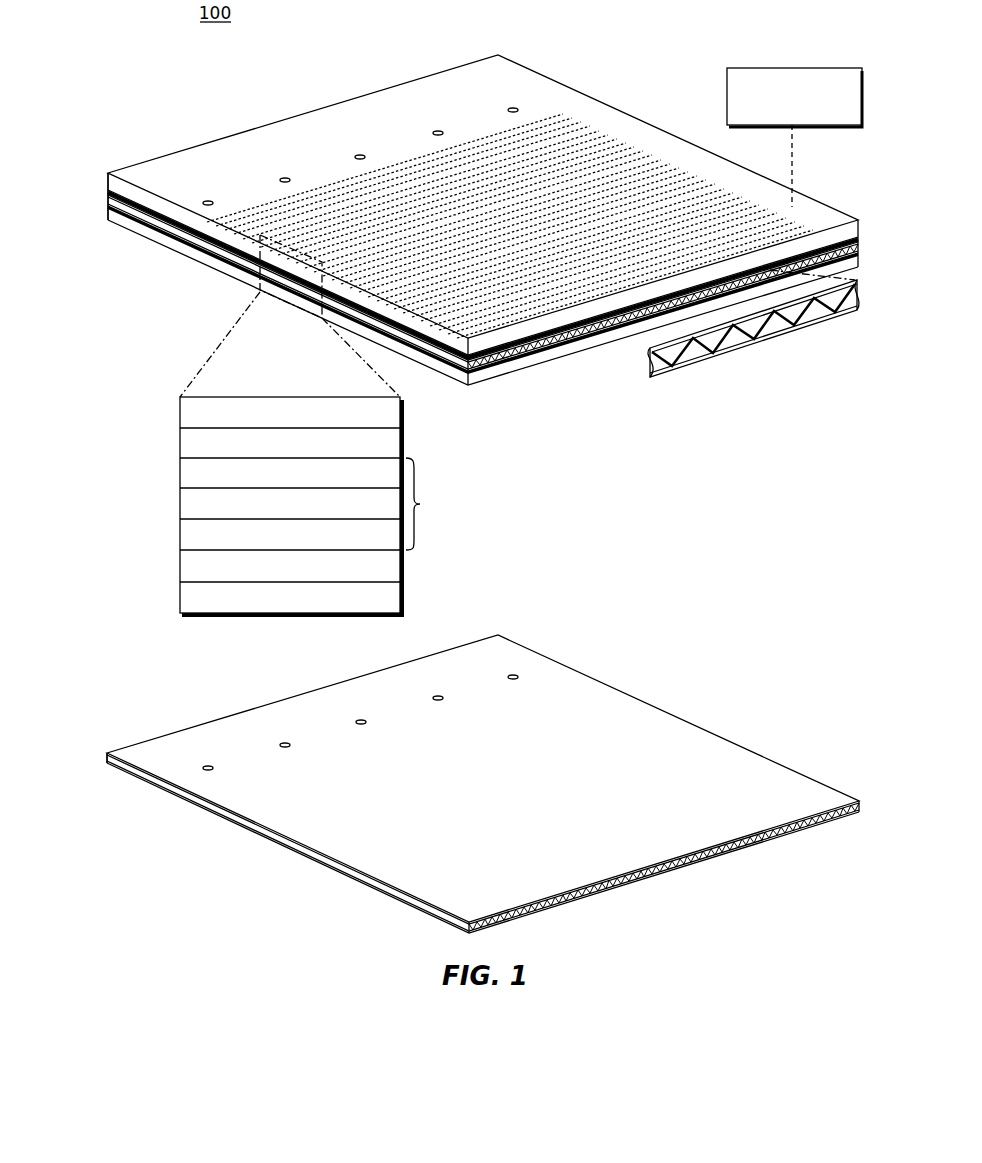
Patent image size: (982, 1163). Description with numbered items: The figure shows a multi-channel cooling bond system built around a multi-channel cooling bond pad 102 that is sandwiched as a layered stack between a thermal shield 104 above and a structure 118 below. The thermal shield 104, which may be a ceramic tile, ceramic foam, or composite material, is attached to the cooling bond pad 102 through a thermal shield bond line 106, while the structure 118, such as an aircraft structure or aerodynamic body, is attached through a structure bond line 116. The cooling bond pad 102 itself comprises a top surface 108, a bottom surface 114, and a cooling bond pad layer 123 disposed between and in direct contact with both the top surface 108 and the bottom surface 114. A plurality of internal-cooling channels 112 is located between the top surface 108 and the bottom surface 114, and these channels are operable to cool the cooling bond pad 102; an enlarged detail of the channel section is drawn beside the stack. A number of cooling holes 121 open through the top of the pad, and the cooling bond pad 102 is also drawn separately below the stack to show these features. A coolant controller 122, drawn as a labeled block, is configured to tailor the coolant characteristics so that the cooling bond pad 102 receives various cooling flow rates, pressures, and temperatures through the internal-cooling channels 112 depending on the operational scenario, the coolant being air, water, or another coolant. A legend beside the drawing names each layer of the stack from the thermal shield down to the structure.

The multi-channel cooling bond pad 102 is at (660, 613).
The thermal shield 104 is at (140, 196).
The thermal shield bond line 106 is at (140, 224).
The top surface 108 is at (178, 232).
The internal-cooling channels 112 is at (692, 356).
The bottom surface 114 is at (222, 250).
The structure bond line 116 is at (452, 365).
The structure 118 is at (458, 386).
The cooling holes 121 is at (209, 201).
The coolant controller 122 is at (758, 67).
The cooling bond pad layer 123 is at (112, 193).